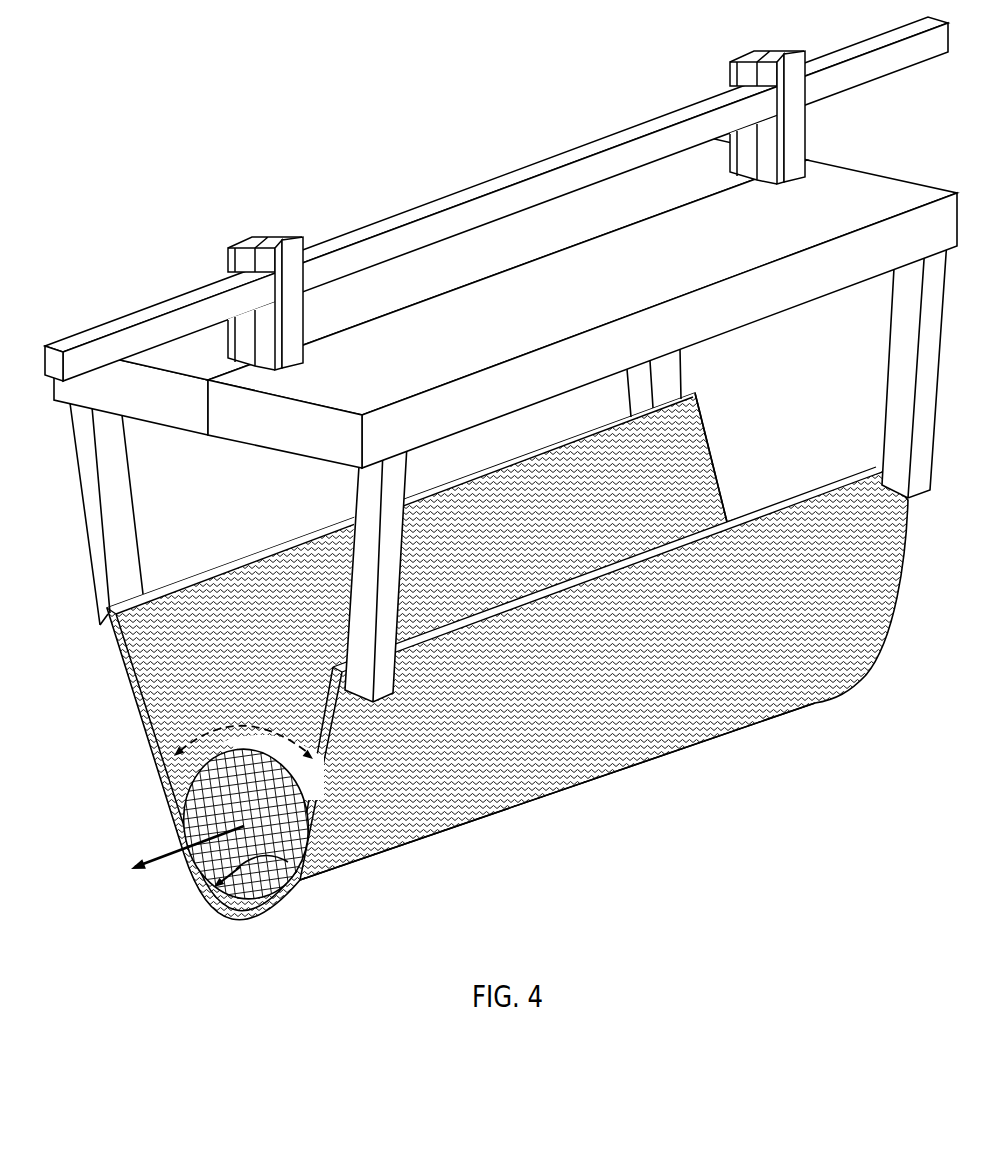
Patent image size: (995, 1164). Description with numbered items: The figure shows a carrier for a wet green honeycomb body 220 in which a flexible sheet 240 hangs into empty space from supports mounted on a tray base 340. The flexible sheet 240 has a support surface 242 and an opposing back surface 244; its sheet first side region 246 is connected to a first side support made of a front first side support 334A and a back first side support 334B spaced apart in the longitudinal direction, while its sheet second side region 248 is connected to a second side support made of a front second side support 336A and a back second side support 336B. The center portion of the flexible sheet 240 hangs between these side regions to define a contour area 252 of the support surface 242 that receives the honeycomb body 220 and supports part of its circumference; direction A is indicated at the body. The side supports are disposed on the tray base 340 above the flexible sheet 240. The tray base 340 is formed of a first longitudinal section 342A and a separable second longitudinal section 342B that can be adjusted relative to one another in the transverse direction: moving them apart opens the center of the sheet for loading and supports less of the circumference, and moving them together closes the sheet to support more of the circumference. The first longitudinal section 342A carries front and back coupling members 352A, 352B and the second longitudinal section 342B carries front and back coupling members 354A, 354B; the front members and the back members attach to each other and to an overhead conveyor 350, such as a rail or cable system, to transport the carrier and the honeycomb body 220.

The tray base 340 is at (505, 407).
The overhead conveyor 350 is at (513, 178).
The front coupling member 352A is at (240, 257).
The back coupling member 352B is at (740, 79).
The front coupling member 354A is at (270, 258).
The back coupling member 354B is at (772, 77).
The first longitudinal section 342A is at (532, 252).
The second longitudinal section 342B is at (599, 296).
The front first side support 334A is at (133, 580).
The back first side support 334B is at (670, 385).
The front second side support 336A is at (395, 685).
The back second side support 336B is at (892, 473).
The flexible sheet 240 is at (507, 656).
The support surface 242 is at (300, 866).
The back surface 244 is at (731, 740).
The sheet first side region 246 is at (487, 478).
The sheet second side region 248 is at (590, 564).
The honeycomb body 220 is at (287, 730).
The contour area 252 is at (210, 737).
The direction A is at (154, 850).